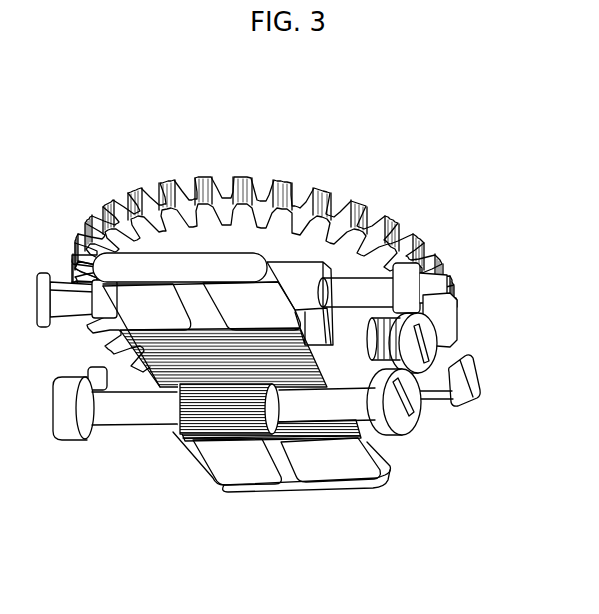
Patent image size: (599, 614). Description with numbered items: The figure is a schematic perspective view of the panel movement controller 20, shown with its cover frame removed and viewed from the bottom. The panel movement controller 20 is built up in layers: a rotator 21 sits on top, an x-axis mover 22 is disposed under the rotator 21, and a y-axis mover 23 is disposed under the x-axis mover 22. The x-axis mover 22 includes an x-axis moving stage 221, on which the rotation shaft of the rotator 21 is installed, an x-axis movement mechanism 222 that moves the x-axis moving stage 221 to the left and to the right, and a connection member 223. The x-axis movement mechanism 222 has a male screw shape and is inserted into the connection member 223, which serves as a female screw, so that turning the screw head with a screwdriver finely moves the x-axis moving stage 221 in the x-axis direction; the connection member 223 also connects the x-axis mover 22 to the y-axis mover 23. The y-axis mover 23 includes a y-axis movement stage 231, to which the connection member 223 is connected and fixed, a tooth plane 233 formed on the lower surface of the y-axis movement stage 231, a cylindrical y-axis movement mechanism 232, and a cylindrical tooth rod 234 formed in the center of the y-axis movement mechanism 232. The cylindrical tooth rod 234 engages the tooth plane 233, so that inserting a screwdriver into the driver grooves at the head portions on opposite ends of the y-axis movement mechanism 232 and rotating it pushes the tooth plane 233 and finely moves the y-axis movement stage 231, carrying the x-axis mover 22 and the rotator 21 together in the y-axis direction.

The panel movement controller 20 is at (244, 104).
The rotator 21 is at (327, 196).
The x-axis mover 22 is at (538, 293).
The x-axis moving stage 221 is at (470, 363).
The x-axis movement mechanism 222 is at (443, 341).
The connection member 223 is at (360, 319).
The y-axis mover 23 is at (380, 552).
The y-axis movement stage 231 is at (305, 478).
The y-axis movement mechanism 232 is at (390, 428).
The tooth plane 233 is at (176, 388).
The cylindrical tooth rod 234 is at (240, 422).